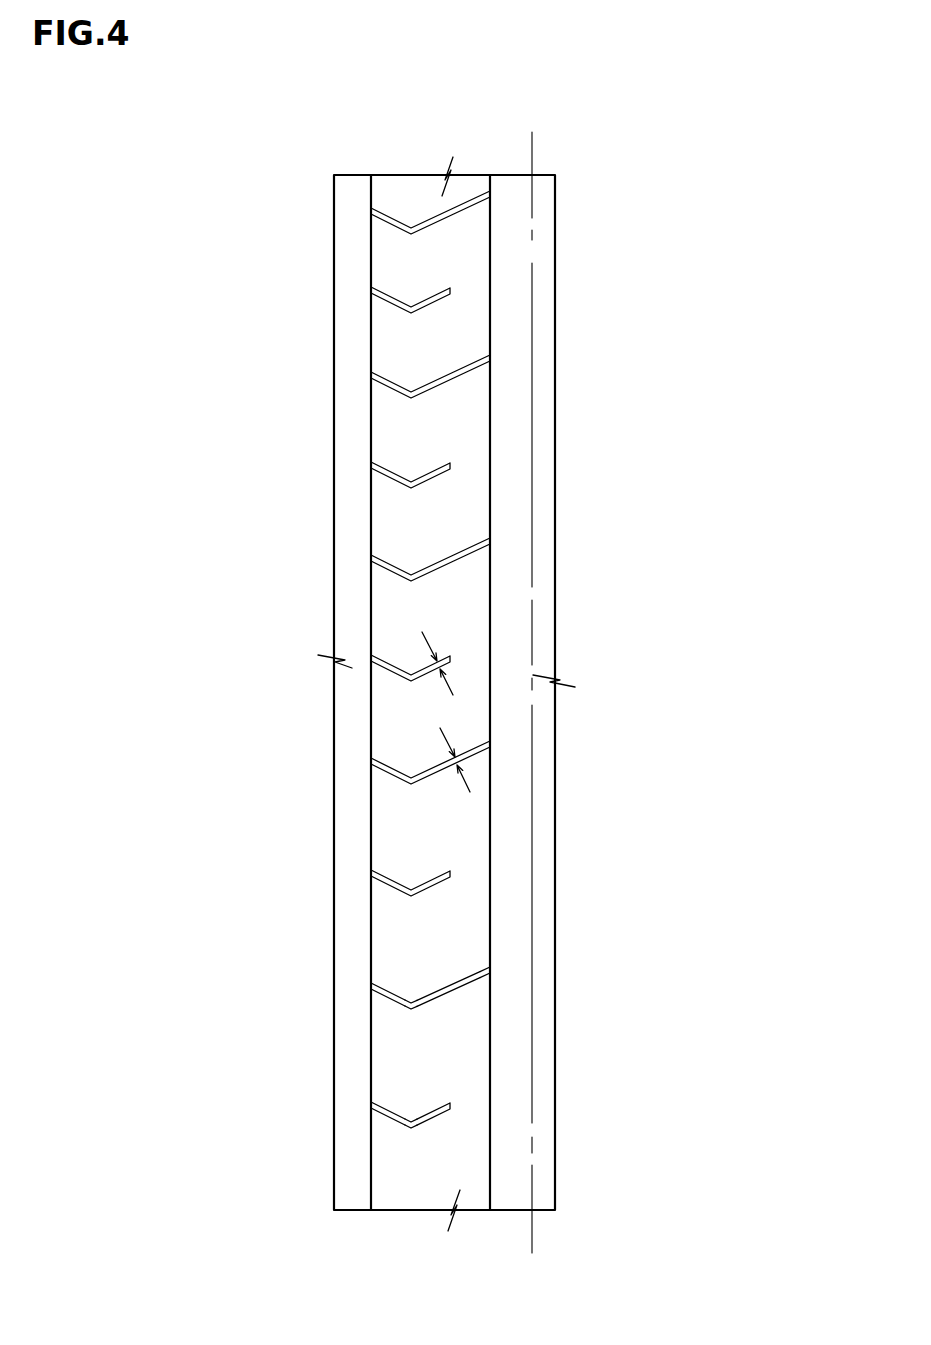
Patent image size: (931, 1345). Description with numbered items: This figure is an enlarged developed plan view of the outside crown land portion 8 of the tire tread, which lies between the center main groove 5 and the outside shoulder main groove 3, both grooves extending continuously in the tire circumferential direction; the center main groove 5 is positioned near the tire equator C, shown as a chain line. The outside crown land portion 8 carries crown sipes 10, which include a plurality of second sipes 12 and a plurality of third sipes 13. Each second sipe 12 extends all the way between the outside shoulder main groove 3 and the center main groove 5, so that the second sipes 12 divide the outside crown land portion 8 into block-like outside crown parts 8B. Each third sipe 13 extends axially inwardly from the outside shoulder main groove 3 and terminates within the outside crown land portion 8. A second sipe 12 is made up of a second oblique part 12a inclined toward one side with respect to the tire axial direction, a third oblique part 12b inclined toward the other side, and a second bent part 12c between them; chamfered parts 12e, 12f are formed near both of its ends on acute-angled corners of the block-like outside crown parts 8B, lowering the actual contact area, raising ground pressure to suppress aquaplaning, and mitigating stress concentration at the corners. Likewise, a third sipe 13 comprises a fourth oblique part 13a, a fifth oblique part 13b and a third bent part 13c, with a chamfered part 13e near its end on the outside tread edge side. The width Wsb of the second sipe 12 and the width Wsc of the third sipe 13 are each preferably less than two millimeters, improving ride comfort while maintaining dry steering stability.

The outside shoulder main groove 3 is at (344, 333).
The center main groove 5 is at (504, 225).
The outside crown land portion 8 is at (419, 243).
The block-like outside crown part 8B is at (462, 838).
The crown sipes 10 is at (122, 937).
The second sipe 12 is at (403, 618).
The second oblique part 12a is at (386, 990).
The third oblique part 12b is at (460, 975).
The second bent part 12c is at (410, 1006).
The chamfered part 12e is at (383, 997).
The chamfered part 12f is at (490, 971).
The third sipe 13 is at (286, 769).
The fourth oblique part 13a is at (390, 1104).
The fifth oblique part 13b is at (432, 1108).
The third bent part 13c is at (412, 1128).
The chamfered part 13e is at (385, 1118).
The tire equator C is at (531, 675).
The width of the third sipe Wsc is at (440, 662).
The width of the second sipe Wsb is at (490, 744).